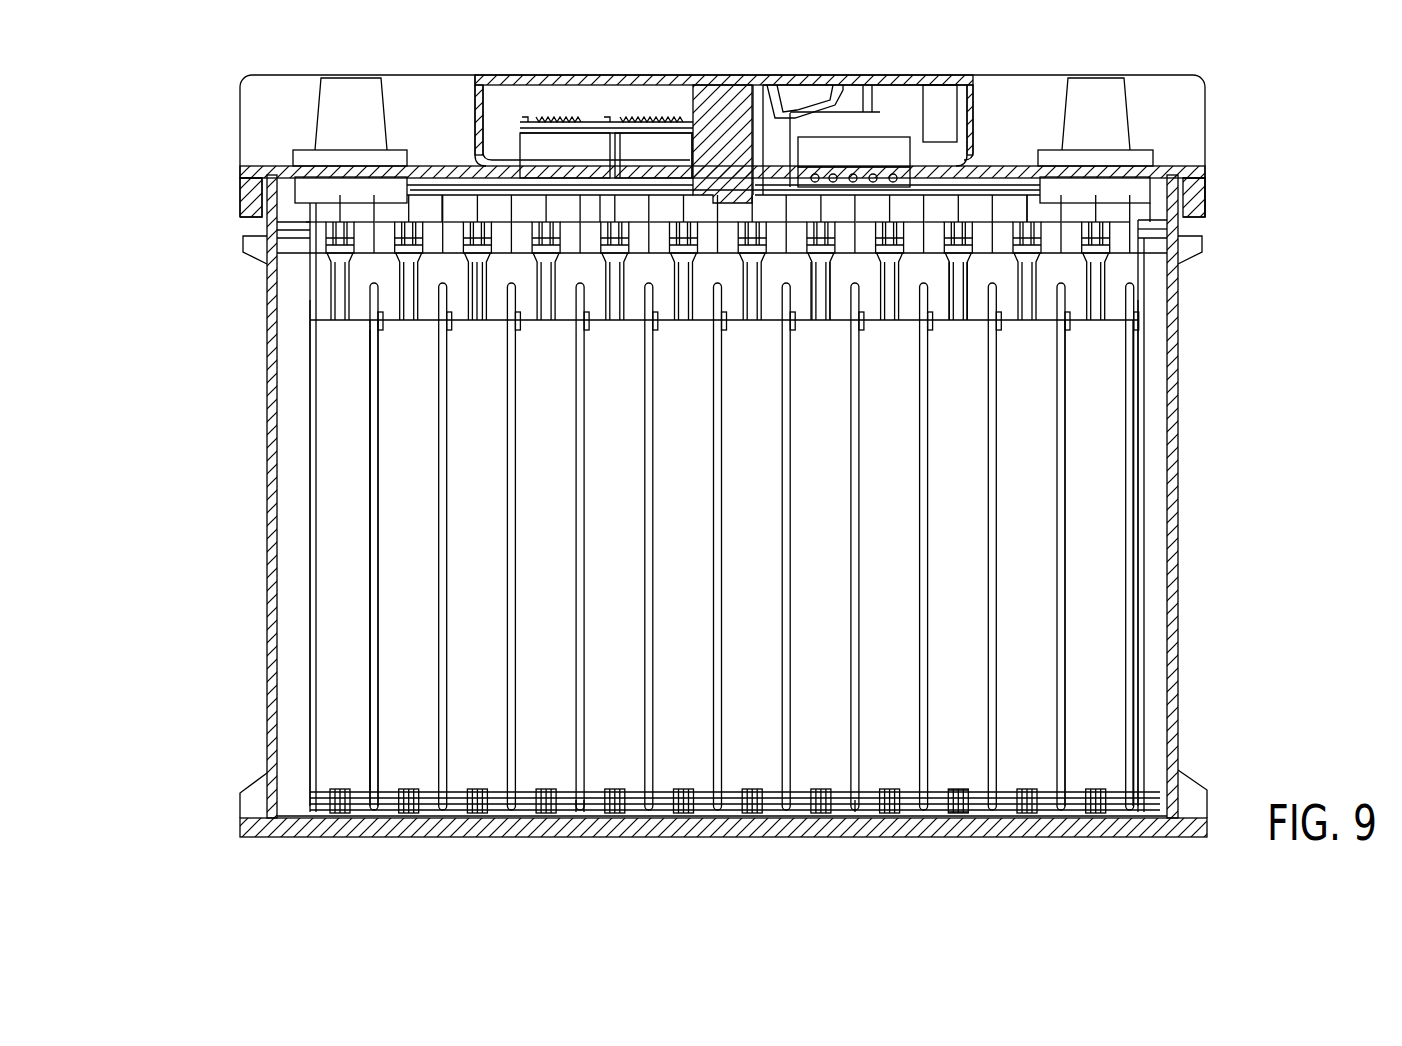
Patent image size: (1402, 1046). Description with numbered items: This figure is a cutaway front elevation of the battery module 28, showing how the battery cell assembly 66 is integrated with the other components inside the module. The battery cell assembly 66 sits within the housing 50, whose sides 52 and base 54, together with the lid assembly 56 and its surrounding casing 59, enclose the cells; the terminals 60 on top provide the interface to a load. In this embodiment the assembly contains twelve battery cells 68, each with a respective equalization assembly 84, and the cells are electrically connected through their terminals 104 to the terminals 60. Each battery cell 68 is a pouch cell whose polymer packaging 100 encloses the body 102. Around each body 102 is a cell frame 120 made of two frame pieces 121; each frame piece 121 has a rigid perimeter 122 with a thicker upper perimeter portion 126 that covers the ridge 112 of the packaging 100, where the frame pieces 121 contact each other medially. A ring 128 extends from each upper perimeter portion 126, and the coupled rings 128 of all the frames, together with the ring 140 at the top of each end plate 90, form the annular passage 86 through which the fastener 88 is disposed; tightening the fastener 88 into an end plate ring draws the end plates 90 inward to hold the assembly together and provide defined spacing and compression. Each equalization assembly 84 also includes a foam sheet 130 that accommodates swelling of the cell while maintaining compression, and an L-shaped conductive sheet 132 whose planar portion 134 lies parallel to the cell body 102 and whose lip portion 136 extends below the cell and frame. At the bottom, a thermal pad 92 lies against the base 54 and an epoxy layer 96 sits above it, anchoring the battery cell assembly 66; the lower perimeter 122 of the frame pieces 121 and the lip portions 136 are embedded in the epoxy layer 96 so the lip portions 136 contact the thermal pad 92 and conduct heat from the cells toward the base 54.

The battery module 28 is at (122, 54).
The housing 50 is at (255, 382).
The sides 52 is at (270, 537).
The base 54 is at (355, 822).
The lid assembly 56 is at (284, 72).
The casing 59 is at (240, 125).
The terminals 60 is at (355, 110).
The battery cell assembly 66 is at (255, 722).
The battery cell 68 is at (1100, 510).
The equalization assembly 84 is at (420, 195).
The passage 86 is at (298, 231).
The fastener 88 is at (1152, 235).
The end plates 90 is at (1155, 430).
The thermal pad 92 is at (730, 820).
The epoxy layer 96 is at (862, 815).
The polymer packaging 100 is at (350, 460).
The body 102 is at (355, 655).
The terminals 104 is at (598, 212).
The ridge 112 is at (488, 286).
The cell frame 120 is at (1035, 212).
The frame pieces 121 is at (803, 277).
The perimeter 122 is at (966, 815).
The upper perimeter portion 126 is at (983, 272).
The rings 128 is at (665, 213).
The foam sheet 130 is at (390, 748).
The conductive sheet 132 is at (358, 742).
The planar portion 134 is at (572, 745).
The lip portion 136 is at (570, 818).
The ring 140 is at (1155, 212).